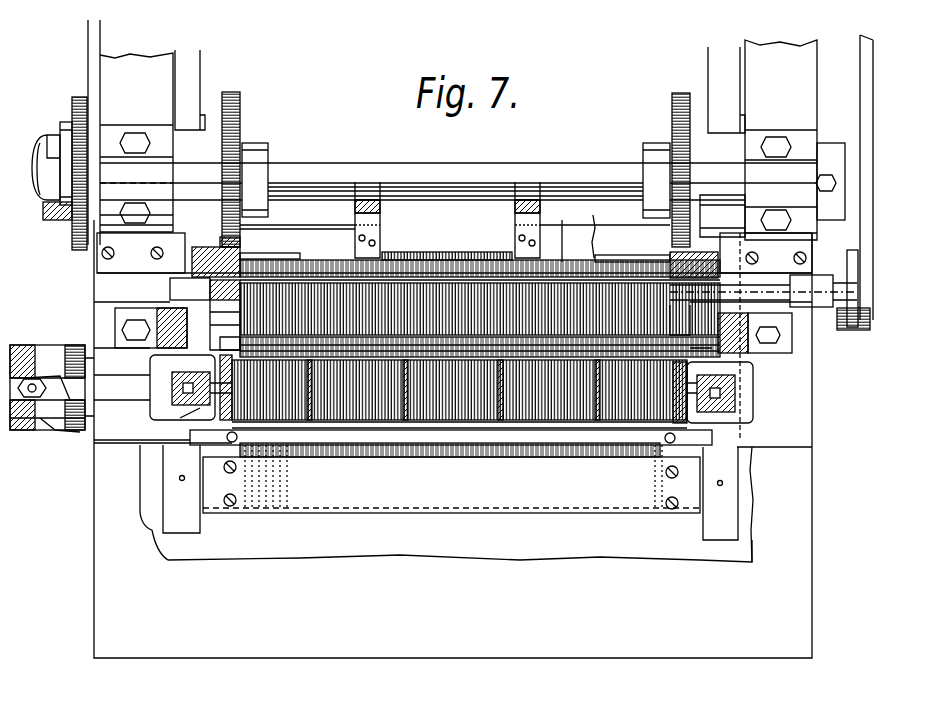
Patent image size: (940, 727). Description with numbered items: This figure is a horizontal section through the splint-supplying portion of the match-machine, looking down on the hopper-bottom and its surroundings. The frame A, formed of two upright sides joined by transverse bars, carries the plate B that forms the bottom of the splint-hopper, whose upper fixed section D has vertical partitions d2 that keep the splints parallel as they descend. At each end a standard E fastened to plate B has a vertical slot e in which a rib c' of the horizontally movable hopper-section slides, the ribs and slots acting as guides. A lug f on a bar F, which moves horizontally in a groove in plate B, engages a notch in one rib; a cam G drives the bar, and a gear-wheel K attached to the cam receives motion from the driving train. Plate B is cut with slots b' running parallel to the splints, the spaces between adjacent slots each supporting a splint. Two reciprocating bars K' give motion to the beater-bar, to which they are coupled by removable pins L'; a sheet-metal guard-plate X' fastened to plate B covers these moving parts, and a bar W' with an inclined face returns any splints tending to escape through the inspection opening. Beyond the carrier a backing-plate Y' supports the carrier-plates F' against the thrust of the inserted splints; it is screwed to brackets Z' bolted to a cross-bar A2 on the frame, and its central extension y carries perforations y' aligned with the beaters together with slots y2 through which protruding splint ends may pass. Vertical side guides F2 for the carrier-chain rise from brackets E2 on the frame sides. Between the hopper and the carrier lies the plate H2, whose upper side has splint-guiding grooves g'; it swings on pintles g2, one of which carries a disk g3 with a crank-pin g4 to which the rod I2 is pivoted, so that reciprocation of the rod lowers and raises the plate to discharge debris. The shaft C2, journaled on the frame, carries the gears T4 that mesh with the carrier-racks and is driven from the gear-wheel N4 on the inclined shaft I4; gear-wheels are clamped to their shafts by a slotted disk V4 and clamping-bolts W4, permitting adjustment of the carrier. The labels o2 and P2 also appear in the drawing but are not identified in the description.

The frame A is at (452, 132).
The cross-bar A2 is at (445, 235).
The plate B is at (453, 439).
The shaft C2 is at (448, 170).
The fixed hopper-section D is at (451, 471).
The vertical partitions d2 is at (310, 445).
The standard E is at (178, 375).
The bracket E2 is at (818, 243).
The vertical slot e is at (183, 388).
The bar F is at (115, 386).
The carrier-plate F' is at (592, 227).
The side guide F2 is at (248, 248).
The lug f is at (345, 311).
The cam G is at (28, 345).
The splint-guiding grooves g' is at (450, 325).
The pintles g2 is at (770, 273).
The disk g3 is at (860, 262).
The crank-pin g4 is at (872, 318).
The plate H2 is at (494, 333).
The rod I2 is at (870, 212).
The shaft I4 is at (730, 62).
The gear-wheel K is at (60, 442).
The horizontally-reciprocating bar K' is at (458, 503).
The pin L' is at (446, 484).
The gear-wheel N4 is at (78, 97).
The block o2 is at (115, 310).
The plate P2 is at (133, 348).
The gear T4 is at (229, 92).
The disk V4 is at (62, 128).
The clamping-bolts W4 is at (47, 140).
The bar W' is at (476, 367).
The guard-plate X' is at (452, 573).
The backing-plate Y' is at (485, 228).
The vertical extension y is at (543, 246).
The holes y' is at (447, 245).
The vertical slot y2 is at (448, 252).
The bracket Z' is at (430, 220).
The slots b' is at (184, 424).
The vertical rib c' is at (447, 399).